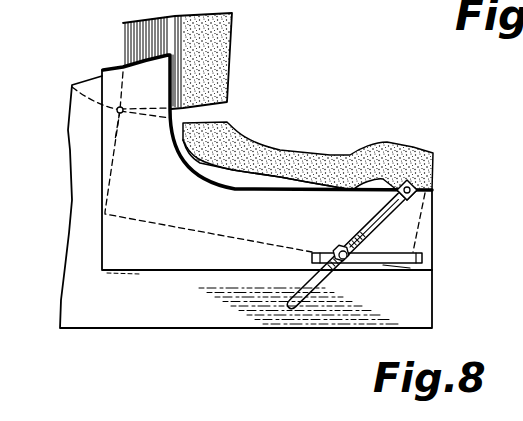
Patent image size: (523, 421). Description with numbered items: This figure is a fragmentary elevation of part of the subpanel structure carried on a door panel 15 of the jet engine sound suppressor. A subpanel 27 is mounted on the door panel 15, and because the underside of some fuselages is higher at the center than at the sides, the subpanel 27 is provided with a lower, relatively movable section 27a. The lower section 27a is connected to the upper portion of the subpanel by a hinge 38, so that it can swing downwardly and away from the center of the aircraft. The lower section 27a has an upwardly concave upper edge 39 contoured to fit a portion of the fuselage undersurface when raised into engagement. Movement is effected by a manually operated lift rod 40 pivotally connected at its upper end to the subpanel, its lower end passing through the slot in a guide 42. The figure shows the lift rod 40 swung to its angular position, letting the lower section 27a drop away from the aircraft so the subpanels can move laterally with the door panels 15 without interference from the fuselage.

The door panel 15 is at (115, 308).
The subpanel 27 is at (143, 32).
The lower section 27a is at (236, 168).
The hinge 38 is at (72, 86).
The upper edge 39 is at (340, 154).
The lift rod 40 is at (385, 213).
The guide 42 is at (423, 254).